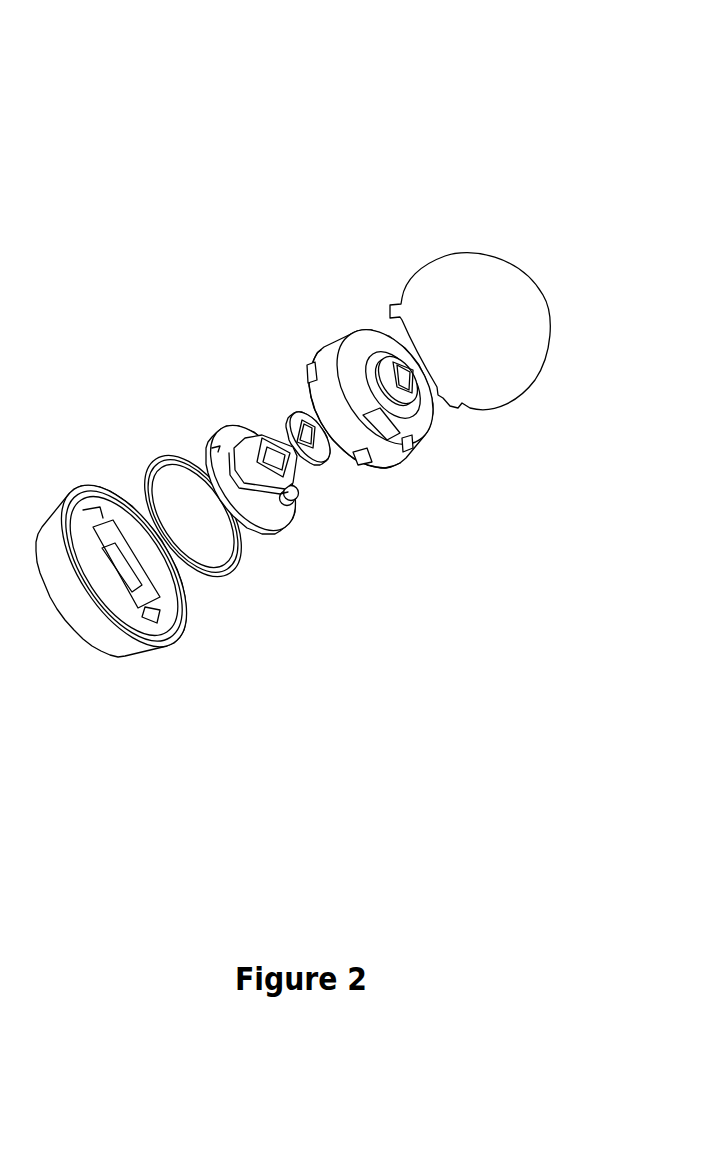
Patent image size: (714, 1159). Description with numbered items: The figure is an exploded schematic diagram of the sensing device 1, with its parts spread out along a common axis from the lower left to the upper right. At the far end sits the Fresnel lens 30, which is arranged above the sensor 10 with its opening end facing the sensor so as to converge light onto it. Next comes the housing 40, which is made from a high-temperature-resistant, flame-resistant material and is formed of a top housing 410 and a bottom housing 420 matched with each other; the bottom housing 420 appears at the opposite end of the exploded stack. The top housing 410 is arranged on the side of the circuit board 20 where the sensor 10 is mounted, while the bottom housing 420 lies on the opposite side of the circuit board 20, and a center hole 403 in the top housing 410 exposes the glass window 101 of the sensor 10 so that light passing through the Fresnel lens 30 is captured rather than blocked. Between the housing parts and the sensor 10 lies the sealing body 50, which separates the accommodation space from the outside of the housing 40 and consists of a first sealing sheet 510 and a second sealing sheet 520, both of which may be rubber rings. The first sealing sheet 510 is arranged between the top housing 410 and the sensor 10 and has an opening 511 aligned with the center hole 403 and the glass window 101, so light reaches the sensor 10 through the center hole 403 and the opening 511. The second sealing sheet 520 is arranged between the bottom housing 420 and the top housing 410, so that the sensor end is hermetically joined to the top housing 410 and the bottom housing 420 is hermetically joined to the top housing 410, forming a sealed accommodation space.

The sensing device 1 is at (378, 156).
The sensor 10 is at (255, 491).
The glass window 101 is at (263, 438).
The circuit board 20 is at (253, 518).
The Fresnel lens 30 is at (548, 338).
The housing 40 is at (288, 545).
The center hole 403 is at (437, 400).
The top housing 410 is at (423, 462).
The bottom housing 420 is at (97, 635).
The sealing body 50 is at (216, 397).
The first sealing sheet 510 is at (287, 444).
The opening 511 is at (315, 465).
The second sealing sheet 520 is at (157, 462).